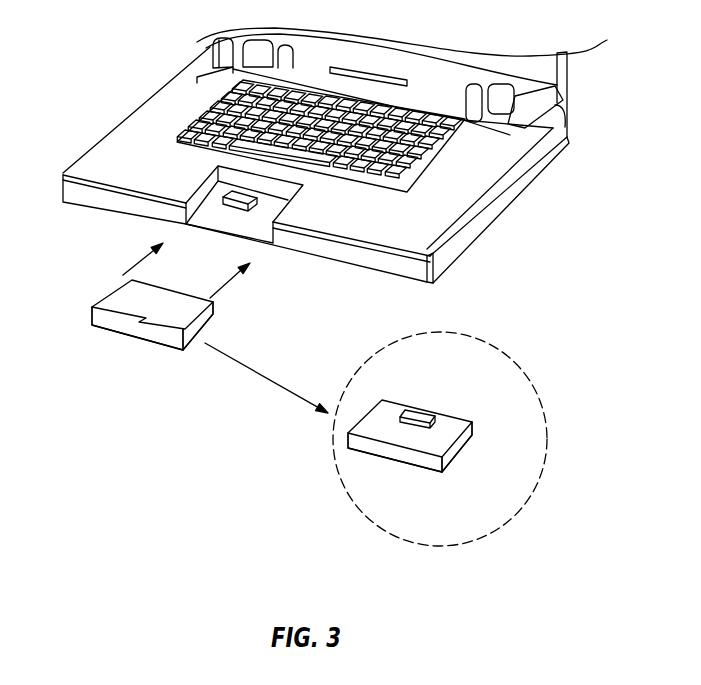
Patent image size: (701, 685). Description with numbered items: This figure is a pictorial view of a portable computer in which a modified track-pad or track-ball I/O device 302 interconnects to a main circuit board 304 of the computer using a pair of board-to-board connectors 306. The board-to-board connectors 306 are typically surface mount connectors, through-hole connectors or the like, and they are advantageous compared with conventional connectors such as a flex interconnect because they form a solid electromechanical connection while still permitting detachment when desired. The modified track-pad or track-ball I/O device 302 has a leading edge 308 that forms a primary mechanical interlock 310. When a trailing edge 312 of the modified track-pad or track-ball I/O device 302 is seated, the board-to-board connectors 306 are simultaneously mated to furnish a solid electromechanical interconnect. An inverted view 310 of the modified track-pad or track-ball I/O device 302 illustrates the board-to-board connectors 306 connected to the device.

The modified track-pad or track-ball I/O device 302 is at (289, 371).
The main circuit board 304 is at (247, 227).
The board-to-board connectors 306 is at (322, 287).
The leading edge 308 is at (358, 383).
The inverted view 310 is at (462, 439).
The trailing edge 312 is at (267, 400).